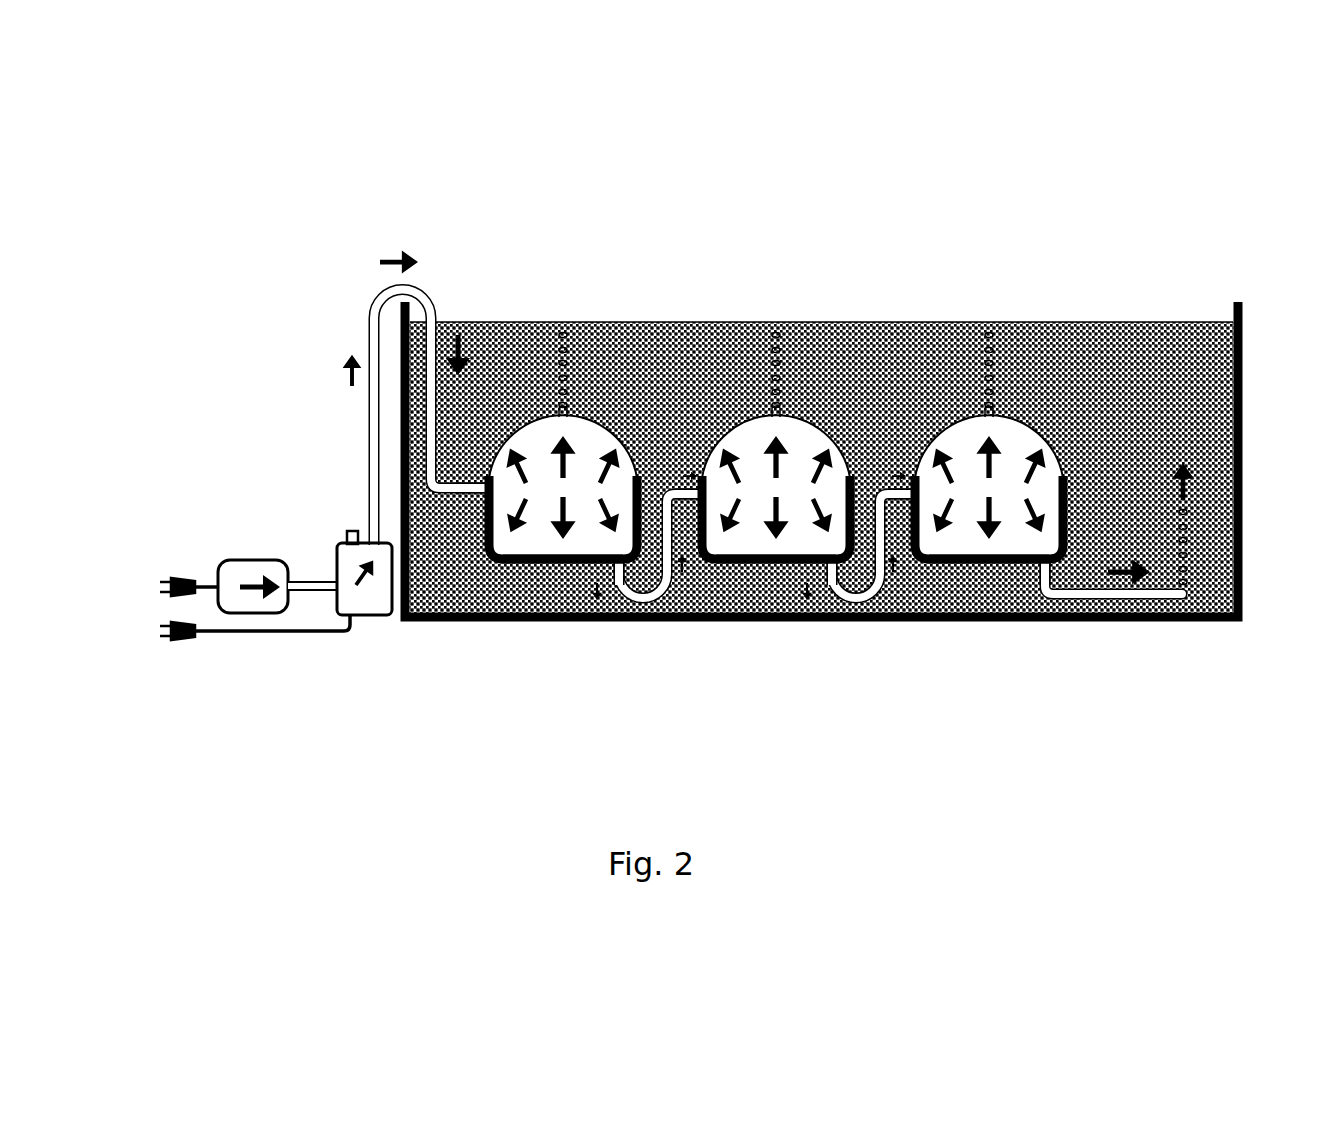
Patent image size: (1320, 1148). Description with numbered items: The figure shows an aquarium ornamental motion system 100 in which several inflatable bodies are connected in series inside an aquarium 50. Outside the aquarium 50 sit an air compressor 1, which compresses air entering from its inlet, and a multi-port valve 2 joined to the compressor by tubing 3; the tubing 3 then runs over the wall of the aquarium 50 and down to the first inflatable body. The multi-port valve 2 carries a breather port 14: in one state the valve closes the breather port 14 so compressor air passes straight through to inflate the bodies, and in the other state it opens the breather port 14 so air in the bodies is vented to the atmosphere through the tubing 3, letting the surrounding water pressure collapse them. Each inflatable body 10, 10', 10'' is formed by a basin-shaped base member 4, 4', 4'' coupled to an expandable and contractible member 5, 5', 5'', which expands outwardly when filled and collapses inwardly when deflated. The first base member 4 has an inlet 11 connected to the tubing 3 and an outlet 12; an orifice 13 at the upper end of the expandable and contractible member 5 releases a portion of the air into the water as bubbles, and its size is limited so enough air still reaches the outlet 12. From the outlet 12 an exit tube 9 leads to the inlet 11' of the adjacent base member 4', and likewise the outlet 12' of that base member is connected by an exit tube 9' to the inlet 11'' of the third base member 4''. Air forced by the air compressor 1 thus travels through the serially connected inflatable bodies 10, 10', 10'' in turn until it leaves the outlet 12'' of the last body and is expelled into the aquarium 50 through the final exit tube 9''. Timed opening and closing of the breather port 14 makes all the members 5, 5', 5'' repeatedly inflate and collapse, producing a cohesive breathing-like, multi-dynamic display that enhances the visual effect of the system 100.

The aquarium ornamental motion system 100 is at (1088, 169).
The aquarium 50 is at (1232, 302).
The tubing 3 is at (368, 314).
The breather port 14 is at (348, 534).
The air compressor 1 is at (255, 613).
The multi-port valve 2 is at (367, 615).
The inlet 11 is at (470, 355).
The expandable and contractible member 5 is at (563, 375).
The orifice 13 is at (561, 410).
The base member 4 is at (535, 558).
The inflatable body 10 is at (563, 626).
The outlet 12 is at (579, 651).
The exit tube 9 is at (647, 605).
The inlet 11' is at (717, 357).
The expandable and contractible member 5' is at (804, 352).
The base member 4' is at (749, 566).
The inflatable body 10' is at (775, 627).
The outlet 12' is at (805, 648).
The exit tube 9' is at (859, 618).
The inlet 11'' is at (932, 350).
The expandable and contractible member 5'' is at (1003, 358).
The base member 4'' is at (969, 578).
The inflatable body 10'' is at (989, 626).
The outlet 12'' is at (1036, 652).
The exit tube 9'' is at (1113, 645).